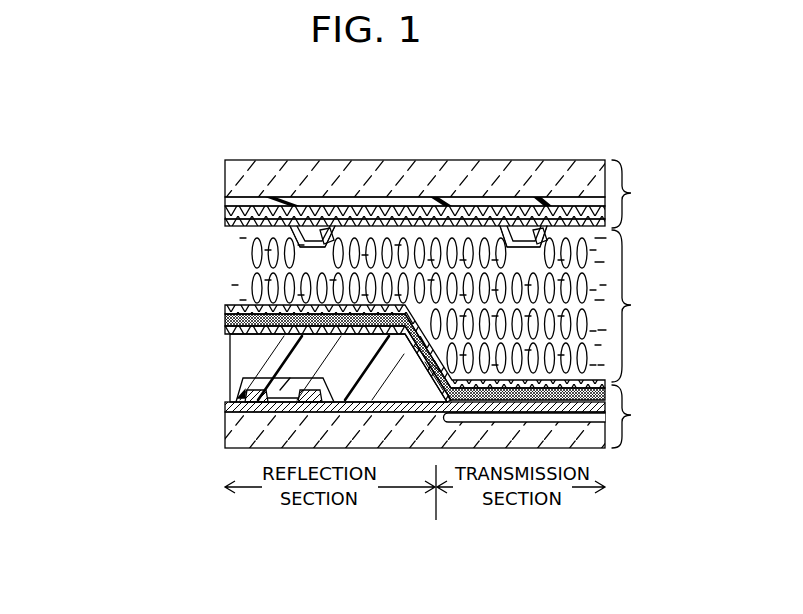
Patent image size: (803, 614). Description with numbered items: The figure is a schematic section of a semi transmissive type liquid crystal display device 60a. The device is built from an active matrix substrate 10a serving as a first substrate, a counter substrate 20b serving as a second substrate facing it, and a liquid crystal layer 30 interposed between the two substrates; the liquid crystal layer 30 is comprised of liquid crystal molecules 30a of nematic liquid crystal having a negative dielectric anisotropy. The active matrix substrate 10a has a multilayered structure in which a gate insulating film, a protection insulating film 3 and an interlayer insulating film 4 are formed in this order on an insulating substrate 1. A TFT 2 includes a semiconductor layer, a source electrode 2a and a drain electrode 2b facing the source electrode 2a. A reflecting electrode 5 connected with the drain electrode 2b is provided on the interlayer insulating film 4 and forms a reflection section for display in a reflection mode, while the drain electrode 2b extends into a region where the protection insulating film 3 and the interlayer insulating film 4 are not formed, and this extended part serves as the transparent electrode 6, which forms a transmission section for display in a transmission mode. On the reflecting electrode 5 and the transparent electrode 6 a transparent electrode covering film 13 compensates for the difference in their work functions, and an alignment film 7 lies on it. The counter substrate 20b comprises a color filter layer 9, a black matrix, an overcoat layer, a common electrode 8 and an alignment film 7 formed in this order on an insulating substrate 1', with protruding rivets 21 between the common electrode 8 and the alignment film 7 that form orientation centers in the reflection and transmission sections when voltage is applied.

The semi transmissive type liquid crystal display device 60a is at (272, 134).
The insulating substrate 1' is at (360, 164).
The color filter layer 9 is at (232, 203).
The common electrode 8 is at (232, 215).
The alignment film 7 is at (232, 226).
The rivet 21 is at (522, 238).
The counter substrate 20b is at (457, 194).
The liquid crystal layer 30 is at (456, 306).
The liquid crystal molecules 30a is at (248, 250).
The electrode covering film 13 is at (228, 320).
The reflecting electrode 5 is at (228, 330).
The interlayer insulating film 4 is at (230, 358).
The protection insulating film 3 is at (245, 377).
The source electrode 2a is at (238, 412).
The TFT 2 is at (245, 426).
The drain electrode 2b is at (373, 412).
The insulating substrate 1 is at (341, 454).
The transparent electrode 6 is at (547, 425).
The active matrix substrate 10a is at (458, 414).